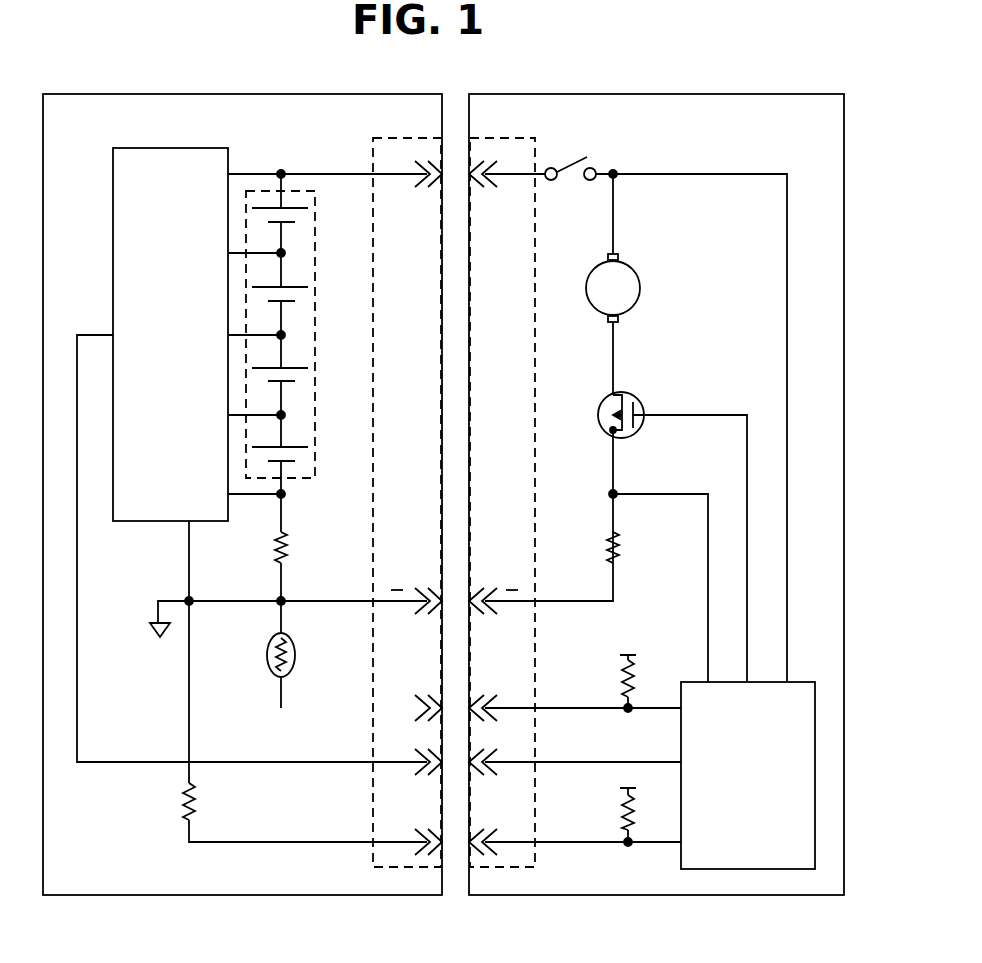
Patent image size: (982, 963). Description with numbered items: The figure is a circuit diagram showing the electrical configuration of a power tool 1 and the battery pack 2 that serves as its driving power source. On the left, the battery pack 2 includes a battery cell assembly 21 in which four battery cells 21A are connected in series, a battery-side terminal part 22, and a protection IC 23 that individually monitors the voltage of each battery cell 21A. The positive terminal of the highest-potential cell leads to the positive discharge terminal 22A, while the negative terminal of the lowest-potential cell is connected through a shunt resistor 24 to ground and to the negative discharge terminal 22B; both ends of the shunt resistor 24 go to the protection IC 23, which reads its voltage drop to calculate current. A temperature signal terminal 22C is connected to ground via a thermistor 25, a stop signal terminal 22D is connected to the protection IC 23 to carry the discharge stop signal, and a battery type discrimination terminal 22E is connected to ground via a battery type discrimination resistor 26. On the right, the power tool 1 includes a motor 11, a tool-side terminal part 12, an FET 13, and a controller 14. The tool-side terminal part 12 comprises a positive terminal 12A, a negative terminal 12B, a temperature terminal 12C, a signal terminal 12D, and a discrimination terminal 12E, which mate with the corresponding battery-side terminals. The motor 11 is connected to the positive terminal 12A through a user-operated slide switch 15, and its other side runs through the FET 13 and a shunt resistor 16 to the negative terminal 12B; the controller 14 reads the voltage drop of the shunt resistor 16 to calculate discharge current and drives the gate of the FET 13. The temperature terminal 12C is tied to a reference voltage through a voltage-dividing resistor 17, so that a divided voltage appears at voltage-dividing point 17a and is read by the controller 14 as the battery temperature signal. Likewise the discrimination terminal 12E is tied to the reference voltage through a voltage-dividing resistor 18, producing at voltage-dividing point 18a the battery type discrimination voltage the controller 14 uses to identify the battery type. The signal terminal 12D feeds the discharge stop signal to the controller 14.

The power tool 1 is at (672, 94).
The battery pack 2 is at (245, 94).
The motor 11 is at (640, 284).
The tool-side terminal part 12 is at (505, 137).
The positive terminal 12A is at (485, 190).
The negative terminal 12B is at (485, 588).
The temperature terminal 12C is at (485, 695).
The signal terminal 12D is at (488, 778).
The discrimination terminal 12E is at (488, 860).
The FET 13 is at (635, 393).
The controller 14 is at (752, 872).
The switch 15 is at (573, 157).
The shunt resistor 16 is at (606, 542).
The voltage-dividing resistor 17 is at (620, 684).
The voltage-dividing point 17a is at (628, 712).
The voltage-dividing resistor 18 is at (620, 818).
The voltage-dividing point 18a is at (628, 845).
The battery cell assembly 21 is at (305, 190).
The battery cell 21A is at (297, 222).
The battery-side terminal part 22 is at (400, 137).
The positive discharge terminal 22A is at (424, 190).
The negative discharge terminal 22B is at (425, 588).
The temperature signal terminal 22C is at (425, 695).
The stop signal terminal 22D is at (415, 772).
The battery type discrimination terminal 22E is at (425, 860).
The protection IC 23 is at (152, 523).
The shunt resistor 24 is at (273, 549).
The thermistor 25 is at (270, 652).
The battery type discrimination resistor 26 is at (182, 800).